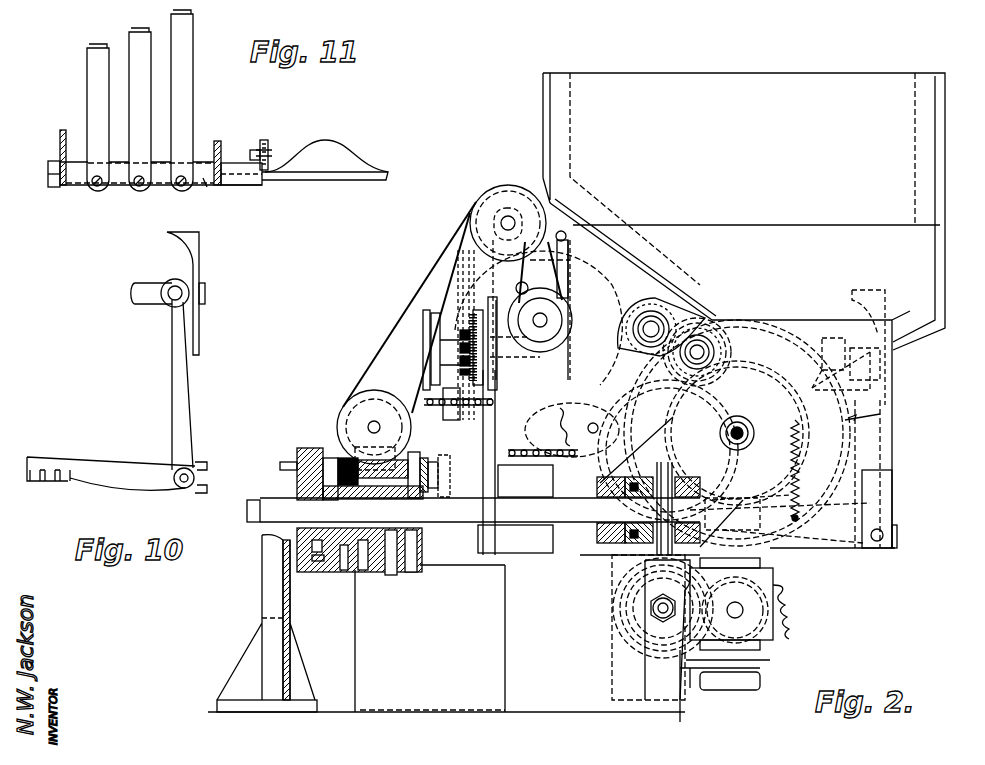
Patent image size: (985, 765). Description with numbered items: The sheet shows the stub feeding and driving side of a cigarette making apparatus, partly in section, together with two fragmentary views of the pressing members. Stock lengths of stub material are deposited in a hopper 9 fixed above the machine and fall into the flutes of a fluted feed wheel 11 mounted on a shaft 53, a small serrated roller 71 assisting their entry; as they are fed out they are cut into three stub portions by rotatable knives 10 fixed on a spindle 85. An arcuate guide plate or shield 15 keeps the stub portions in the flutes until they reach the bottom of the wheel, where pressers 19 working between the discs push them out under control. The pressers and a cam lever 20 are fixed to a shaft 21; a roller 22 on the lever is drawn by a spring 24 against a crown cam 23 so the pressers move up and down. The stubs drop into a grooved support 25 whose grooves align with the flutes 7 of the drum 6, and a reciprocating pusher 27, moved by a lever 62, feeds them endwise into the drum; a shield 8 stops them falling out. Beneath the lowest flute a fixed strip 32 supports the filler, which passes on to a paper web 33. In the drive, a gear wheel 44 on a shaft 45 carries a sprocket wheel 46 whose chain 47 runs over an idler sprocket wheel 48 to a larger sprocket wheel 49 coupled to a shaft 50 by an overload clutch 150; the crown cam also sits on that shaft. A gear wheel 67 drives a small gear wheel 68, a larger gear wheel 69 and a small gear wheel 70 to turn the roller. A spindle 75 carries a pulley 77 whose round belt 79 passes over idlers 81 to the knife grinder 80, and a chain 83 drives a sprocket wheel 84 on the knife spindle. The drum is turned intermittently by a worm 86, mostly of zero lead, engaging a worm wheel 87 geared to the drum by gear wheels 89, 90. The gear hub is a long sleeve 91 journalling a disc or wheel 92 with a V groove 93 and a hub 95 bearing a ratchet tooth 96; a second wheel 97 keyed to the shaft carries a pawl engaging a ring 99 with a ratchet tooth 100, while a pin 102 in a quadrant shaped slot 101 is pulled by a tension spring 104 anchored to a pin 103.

In FIG. 2, the hopper 9 is at (905, 118).
In FIG. 2, the rotatable knives 10 is at (608, 358).
In FIG. 2, the fluted feed wheel 11 is at (880, 414).
In FIG. 2, the arcuate guide plate or shield 15 is at (668, 450).
In FIG. 11, the pressers 19 is at (141, 20).
In FIG. 10, the pressers 19 is at (40, 455).
In FIG. 2, the pressers 19 is at (722, 500).
In FIG. 11, the cam lever 20 is at (264, 182).
In FIG. 10, the cam lever 20 is at (176, 362).
In FIG. 2, the cam lever 20 is at (880, 436).
In FIG. 11, the shaft 21 is at (204, 183).
In FIG. 10, the shaft 21 is at (180, 490).
In FIG. 2, the shaft 21 is at (879, 548).
In FIG. 11, the roller 22 is at (264, 142).
In FIG. 10, the roller 22 is at (170, 280).
In FIG. 2, the roller 22 is at (845, 360).
In FIG. 11, the crown cam 23 is at (302, 146).
In FIG. 10, the crown cam 23 is at (190, 232).
In FIG. 2, the crown cam 23 is at (866, 290).
In FIG. 2, the spring 24 is at (799, 470).
In FIG. 2, the grooved support 25 is at (770, 578).
In FIG. 2, the reciprocating pusher 27 is at (693, 550).
In FIG. 2, the fixed strip 32 is at (695, 690).
In FIG. 2, the paper web 33 is at (745, 690).
In FIG. 2, the gear wheel 44 is at (290, 570).
In FIG. 2, the shaft 45 is at (330, 498).
In FIG. 2, the sprocket wheel 46 is at (490, 555).
In FIG. 2, the chain 47 is at (458, 352).
In FIG. 2, the idler sprocket wheel 48 is at (490, 420).
In FIG. 2, the sprocket wheel 49 is at (462, 250).
In FIG. 10, the shaft 50 is at (153, 308).
In FIG. 2, the shaft 50 is at (838, 338).
In FIG. 2, the shaft 53 is at (739, 426).
In FIG. 2, the lever 62 is at (455, 388).
In FIG. 2, the gear wheel 67 is at (802, 413).
In FIG. 2, the small gear wheel 68 is at (718, 330).
In FIG. 2, the larger gear wheel 69 is at (740, 332).
In FIG. 2, the small gear wheel 70 is at (668, 318).
In FIG. 2, the small roller 71 is at (665, 300).
In FIG. 2, the spindle 75 is at (360, 405).
In FIG. 2, the pulley 77 is at (372, 420).
In FIG. 2, the round belt 79 is at (413, 297).
In FIG. 2, the knife grinder 80 is at (525, 290).
In FIG. 2, the idlers 81 is at (505, 188).
In FIG. 2, the chain 83 is at (560, 434).
In FIG. 2, the sprocket wheel 84 is at (558, 416).
In FIG. 2, the spindle 85 is at (596, 420).
In FIG. 2, the worm 86 is at (675, 465).
In FIG. 2, the worm wheel 87 is at (615, 566).
In FIG. 2, the gear wheel 89 is at (612, 648).
In FIG. 2, the gear wheel 90 is at (778, 645).
In FIG. 2, the long sleeve 91 is at (412, 494).
In FIG. 2, the disc or wheel 92 is at (343, 574).
In FIG. 2, the V groove 93 is at (362, 574).
In FIG. 2, the hub 95 is at (372, 482).
In FIG. 2, the ratchet tooth 96 is at (388, 448).
In FIG. 2, the second wheel 97 is at (418, 574).
In FIG. 2, the ring 99 is at (391, 575).
In FIG. 2, the ratchet tooth 100 is at (444, 476).
In FIG. 2, the quadrant shaped slot 101 is at (300, 470).
In FIG. 2, the pin 102 is at (333, 456).
In FIG. 2, the pin 103 is at (314, 574).
In FIG. 2, the tension spring 104 is at (310, 552).
In FIG. 2, the overload clutch 150 is at (503, 260).
In FIG. 2, the drum 6 is at (786, 622).
In FIG. 2, the flutes 7 is at (788, 596).
In FIG. 2, the shield 8 is at (661, 620).